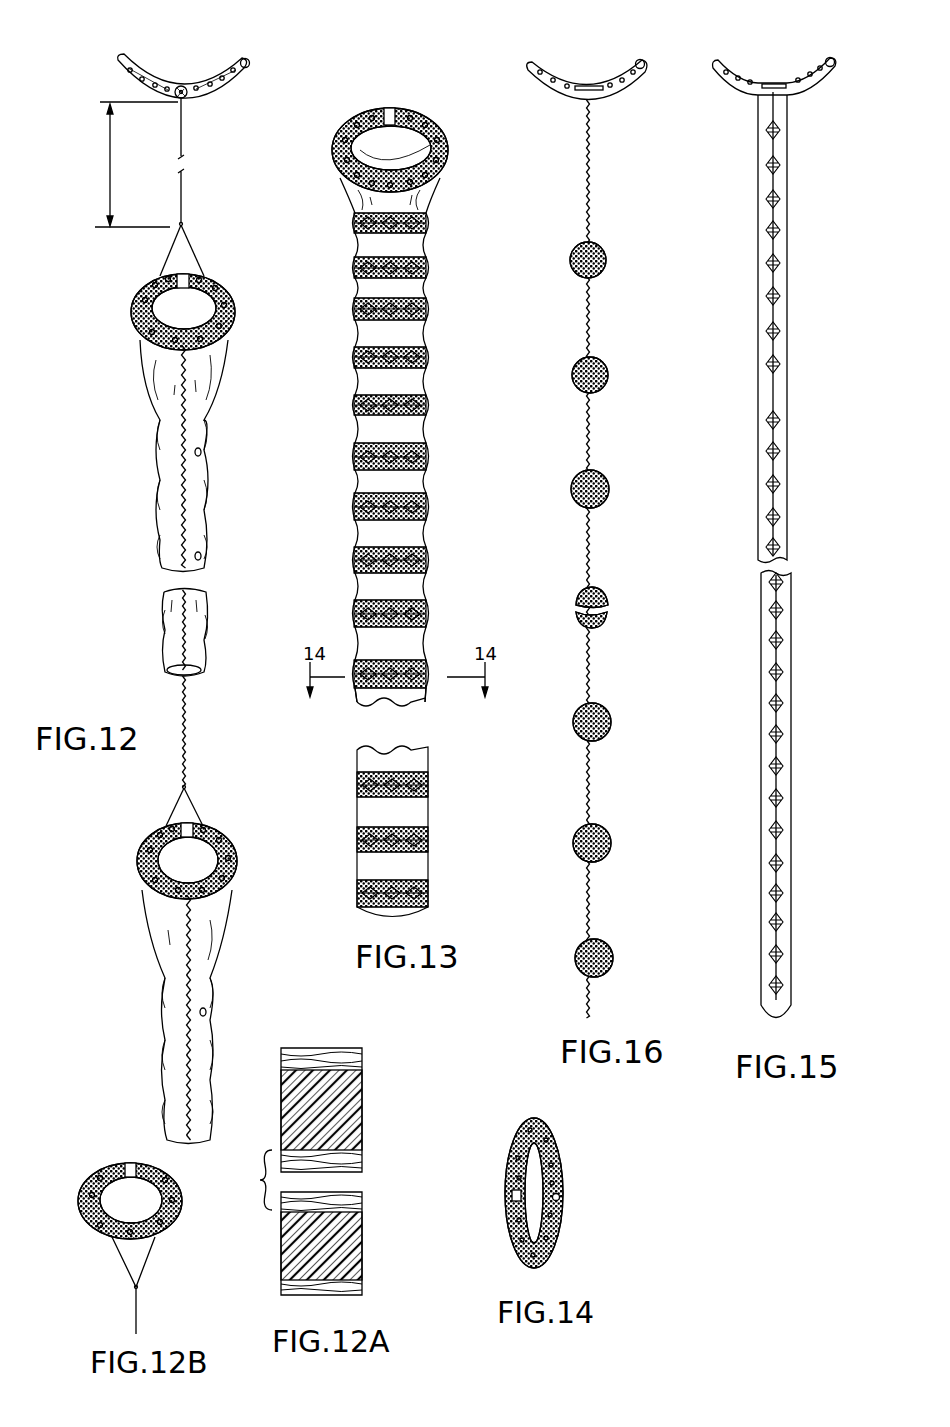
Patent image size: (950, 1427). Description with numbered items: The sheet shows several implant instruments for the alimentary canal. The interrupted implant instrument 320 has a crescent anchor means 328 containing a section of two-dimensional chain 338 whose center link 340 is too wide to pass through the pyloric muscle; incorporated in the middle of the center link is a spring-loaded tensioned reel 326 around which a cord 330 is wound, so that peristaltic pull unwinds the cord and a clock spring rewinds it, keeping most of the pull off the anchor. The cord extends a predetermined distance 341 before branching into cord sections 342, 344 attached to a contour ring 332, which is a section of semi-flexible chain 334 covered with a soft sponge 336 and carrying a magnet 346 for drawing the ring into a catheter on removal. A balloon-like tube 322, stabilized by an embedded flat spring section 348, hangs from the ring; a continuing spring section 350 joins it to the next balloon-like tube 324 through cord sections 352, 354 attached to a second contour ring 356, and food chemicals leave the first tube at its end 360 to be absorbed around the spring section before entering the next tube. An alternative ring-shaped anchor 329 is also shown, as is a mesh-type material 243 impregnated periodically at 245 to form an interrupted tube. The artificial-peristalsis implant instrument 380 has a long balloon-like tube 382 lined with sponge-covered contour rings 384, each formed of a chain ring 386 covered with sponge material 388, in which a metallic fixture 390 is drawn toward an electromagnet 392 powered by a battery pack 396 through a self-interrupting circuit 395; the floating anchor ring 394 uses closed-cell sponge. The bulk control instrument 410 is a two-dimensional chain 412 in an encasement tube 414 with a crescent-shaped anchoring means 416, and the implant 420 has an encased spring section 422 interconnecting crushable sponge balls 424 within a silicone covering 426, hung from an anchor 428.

In FIG. 12, the implant instrument 320 is at (92, 245).
In FIG. 12, the balloon-like tube 322 is at (160, 521).
In FIG. 12, the balloon-like tube 324 is at (178, 1020).
In FIG. 12, the spring-loaded tensioned reel 326 is at (186, 87).
In FIG. 12, the crescent anchor means 328 is at (149, 73).
In FIG. 12B, the ring 329 is at (178, 1214).
In FIG. 12, the cord 330 is at (183, 203).
In FIG. 12B, the cord 330 is at (138, 1297).
In FIG. 12, the contour ring 332 is at (128, 314).
In FIG. 12, the semi-flexible chain 334 is at (140, 345).
In FIG. 12, the sponge 336 is at (232, 318).
In FIG. 12, the two-dimensional chain 338 is at (234, 73).
In FIG. 12, the center link 340 is at (198, 98).
In FIG. 12, the predetermined distance 341 is at (133, 164).
In FIG. 12, the cord section 342 is at (158, 265).
In FIG. 12, the cord section 344 is at (200, 262).
In FIG. 12, the magnet 346 is at (228, 282).
In FIG. 12, the flat spring section 348 is at (185, 473).
In FIG. 12, the spring section 350 is at (186, 735).
In FIG. 12, the cord section 352 is at (170, 806).
In FIG. 12, the cord section 354 is at (200, 810).
In FIG. 12, the contour ring 356 is at (135, 864).
In FIG. 12, the end of tube 360 is at (206, 673).
In FIG. 12A, the mesh-type material 243 is at (290, 1171).
In FIG. 12A, the impregnated mesh portion 245 is at (318, 1203).
In FIG. 13, the implant instrument 380 is at (343, 548).
In FIG. 13, the balloon-like tube 382 is at (426, 582).
In FIG. 13, the contour ring 384 is at (420, 497).
In FIG. 14, the contour ring 384 is at (555, 1228).
In FIG. 13, the semi-flexible chain ring 386 is at (424, 692).
In FIG. 13, the sponge material 388 is at (366, 692).
In FIG. 13, the metallic fixture 390 is at (338, 152).
In FIG. 14, the metallic fixture 390 is at (512, 1196).
In FIG. 13, the electromagnet 392 is at (430, 618).
In FIG. 14, the electromagnet 392 is at (560, 1197).
In FIG. 13, the anchor ring 394 is at (366, 106).
In FIG. 13, the self-interrupting circuit 395 is at (398, 122).
In FIG. 13, the battery pack 396 is at (390, 116).
In FIG. 15, the bulk control instrument 410 is at (800, 373).
In FIG. 15, the two-dimensional chain 412 is at (778, 622).
In FIG. 15, the encasement tube 414 is at (793, 826).
In FIG. 15, the crescent-shaped anchoring means 416 is at (766, 59).
In FIG. 16, the implant 420 is at (604, 541).
In FIG. 16, the encased spring section 422 is at (590, 200).
In FIG. 16, the crushable sponge balls 424 is at (608, 252).
In FIG. 16, the silicone covering 426 is at (600, 283).
In FIG. 16, the anchor cup 428 is at (624, 97).